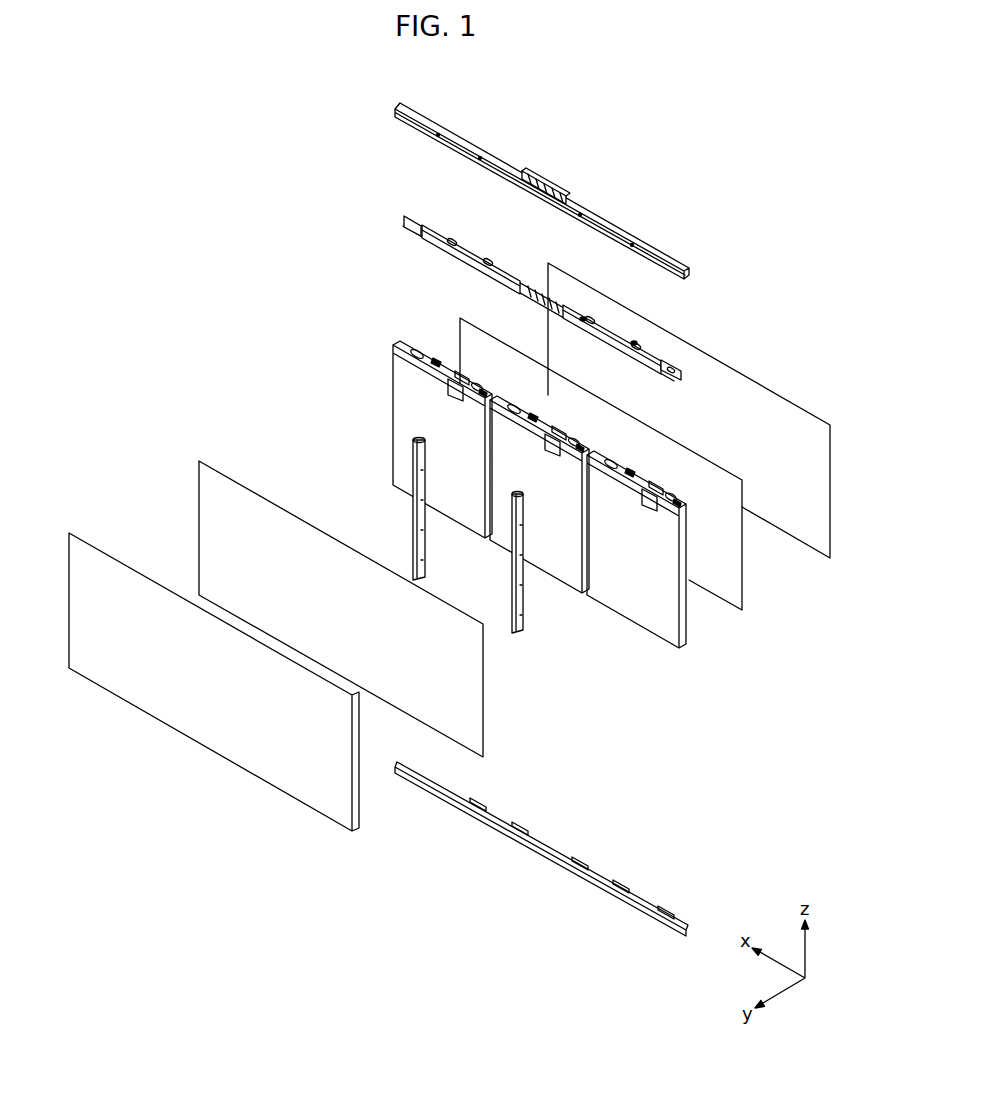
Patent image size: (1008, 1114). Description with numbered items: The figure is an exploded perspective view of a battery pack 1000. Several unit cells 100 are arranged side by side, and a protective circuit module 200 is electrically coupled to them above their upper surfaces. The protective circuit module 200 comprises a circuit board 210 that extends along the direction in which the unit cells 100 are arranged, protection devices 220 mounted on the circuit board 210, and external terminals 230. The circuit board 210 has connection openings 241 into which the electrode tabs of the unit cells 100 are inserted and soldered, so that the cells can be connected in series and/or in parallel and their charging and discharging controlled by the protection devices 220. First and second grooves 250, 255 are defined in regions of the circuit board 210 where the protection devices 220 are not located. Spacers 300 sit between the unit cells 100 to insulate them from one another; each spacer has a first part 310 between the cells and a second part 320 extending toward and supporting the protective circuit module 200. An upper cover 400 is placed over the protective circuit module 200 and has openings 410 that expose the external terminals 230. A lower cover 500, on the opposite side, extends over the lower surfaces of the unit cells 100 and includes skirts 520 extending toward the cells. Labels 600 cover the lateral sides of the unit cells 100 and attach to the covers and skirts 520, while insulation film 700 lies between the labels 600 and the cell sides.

The battery pack 1000 is at (751, 83).
The unit cell 100 is at (393, 366).
The protective circuit module 200 is at (585, 302).
The circuit board 210 is at (676, 368).
The protection device 220 is at (634, 340).
The external terminal 230 is at (540, 284).
The connection opening 241 is at (681, 373).
The first groove 250 is at (556, 292).
The second groove 255 is at (488, 259).
The spacer 300 is at (436, 554).
The first part 310 is at (418, 527).
The second part 320 is at (415, 438).
The upper cover 400 is at (542, 191).
The opening 410 is at (553, 193).
The lower cover 500 is at (562, 849).
The skirt 520 is at (656, 905).
The label 600 is at (780, 396).
The insulation film 700 is at (741, 573).